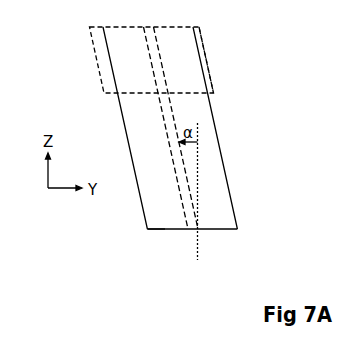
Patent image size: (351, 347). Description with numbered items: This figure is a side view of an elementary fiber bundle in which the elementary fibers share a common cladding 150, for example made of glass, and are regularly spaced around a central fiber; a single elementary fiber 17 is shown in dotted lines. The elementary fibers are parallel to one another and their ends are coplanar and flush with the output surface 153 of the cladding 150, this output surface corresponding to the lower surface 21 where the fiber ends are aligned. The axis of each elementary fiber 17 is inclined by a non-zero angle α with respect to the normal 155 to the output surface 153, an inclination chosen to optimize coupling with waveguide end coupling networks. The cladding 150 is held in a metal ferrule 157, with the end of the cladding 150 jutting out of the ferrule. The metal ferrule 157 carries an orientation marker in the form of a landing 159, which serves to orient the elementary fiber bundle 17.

The elementary fiber 17 is at (173, 115).
The lower surface 21 is at (158, 230).
The cladding 150 is at (215, 203).
The output surface 153 is at (220, 229).
The normal 155 is at (198, 250).
The metal ferrule 157 is at (100, 76).
The landing 159 is at (207, 57).